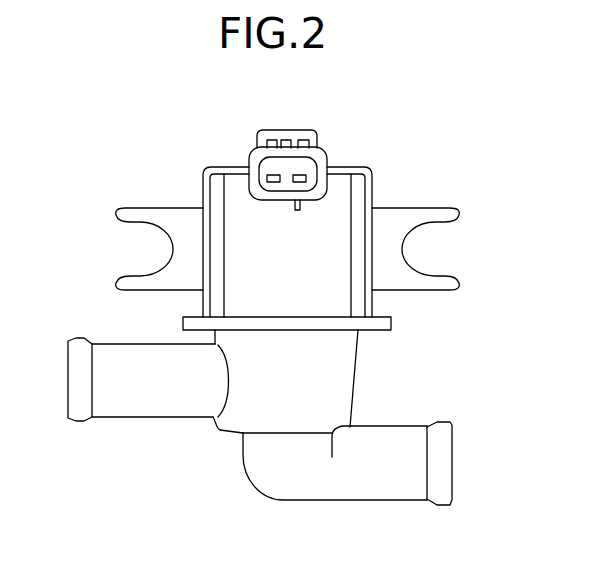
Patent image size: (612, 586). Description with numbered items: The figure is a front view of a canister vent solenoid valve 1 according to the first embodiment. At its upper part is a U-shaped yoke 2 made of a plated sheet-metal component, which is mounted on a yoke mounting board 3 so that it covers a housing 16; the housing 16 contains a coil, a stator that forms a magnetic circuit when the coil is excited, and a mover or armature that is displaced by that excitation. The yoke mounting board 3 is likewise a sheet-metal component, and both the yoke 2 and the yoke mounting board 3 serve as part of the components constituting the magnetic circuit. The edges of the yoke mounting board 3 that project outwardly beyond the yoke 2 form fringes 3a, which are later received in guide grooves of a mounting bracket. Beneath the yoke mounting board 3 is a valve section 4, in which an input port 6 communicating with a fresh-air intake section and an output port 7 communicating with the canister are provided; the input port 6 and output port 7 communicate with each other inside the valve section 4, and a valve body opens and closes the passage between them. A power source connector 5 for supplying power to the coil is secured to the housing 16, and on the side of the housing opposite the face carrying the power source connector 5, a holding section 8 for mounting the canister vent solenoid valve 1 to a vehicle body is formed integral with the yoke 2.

The canister vent solenoid valve 1 is at (218, 430).
The yoke 2 is at (367, 166).
The yoke mounting board 3 is at (337, 323).
The fringes of the yoke mounting board 3a is at (183, 321).
The valve section 4 is at (342, 385).
The power source connector 5 is at (296, 140).
The input port 6 is at (70, 420).
The output port 7 is at (452, 462).
The holding section 8 is at (135, 212).
The housing 16 is at (320, 222).